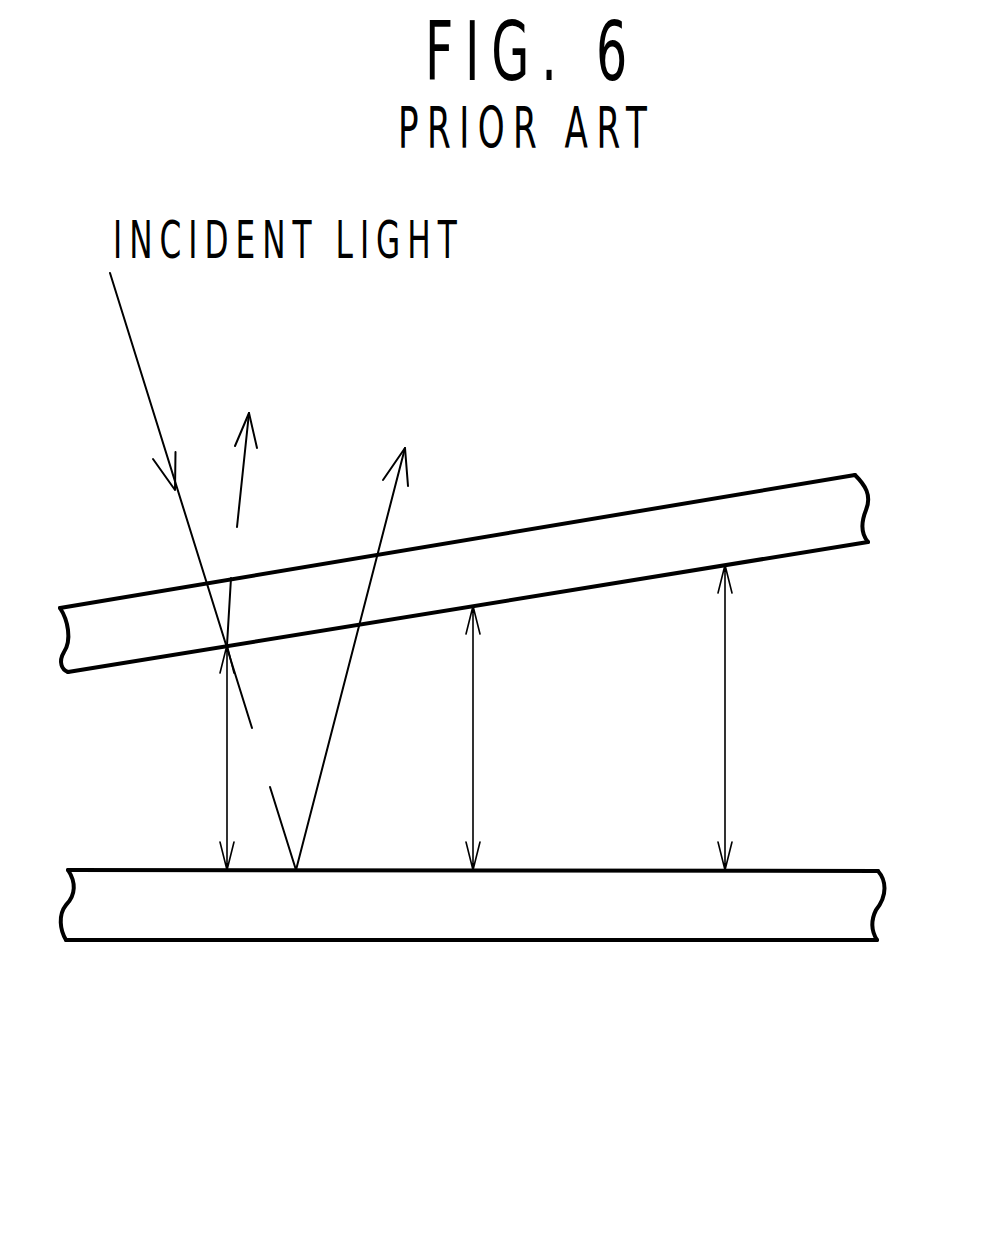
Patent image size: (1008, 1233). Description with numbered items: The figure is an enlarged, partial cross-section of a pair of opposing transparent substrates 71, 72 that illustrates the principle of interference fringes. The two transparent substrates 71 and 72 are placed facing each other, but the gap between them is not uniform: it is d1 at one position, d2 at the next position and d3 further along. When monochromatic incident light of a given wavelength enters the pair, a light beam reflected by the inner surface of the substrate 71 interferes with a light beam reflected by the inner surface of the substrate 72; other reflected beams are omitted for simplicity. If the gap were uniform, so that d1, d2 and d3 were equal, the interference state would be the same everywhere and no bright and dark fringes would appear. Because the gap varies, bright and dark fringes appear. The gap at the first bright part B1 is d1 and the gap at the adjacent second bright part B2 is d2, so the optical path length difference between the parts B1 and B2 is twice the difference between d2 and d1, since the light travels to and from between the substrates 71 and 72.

The transparent substrate 71 is at (810, 927).
The transparent substrate 72 is at (787, 502).
The first bright part B1 is at (233, 529).
The second bright part B2 is at (400, 659).
The gap at the first bright part d1 is at (249, 757).
The gap at the second bright part d2 is at (499, 738).
The gap d3 is at (751, 717).